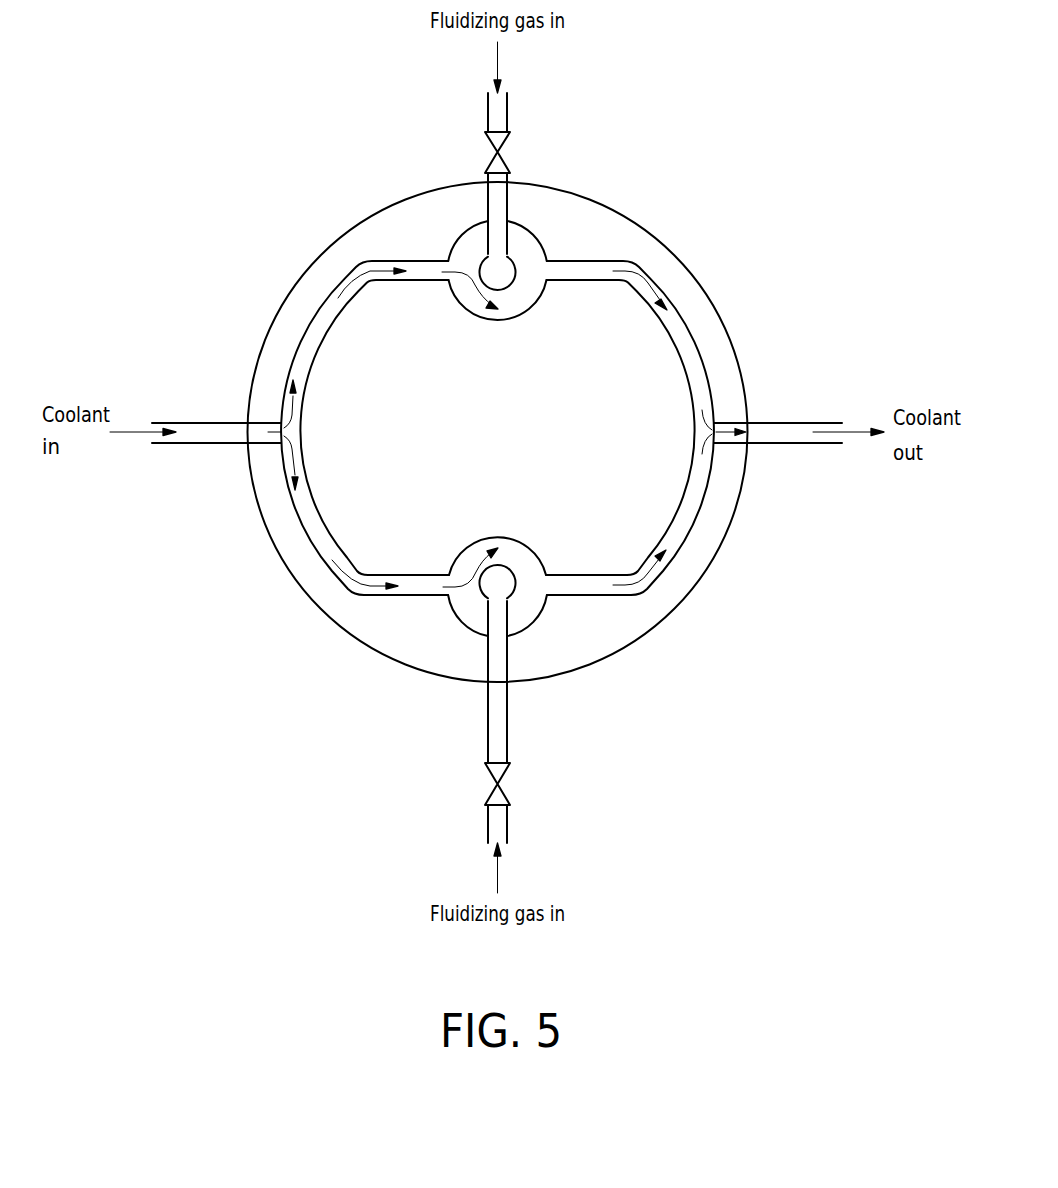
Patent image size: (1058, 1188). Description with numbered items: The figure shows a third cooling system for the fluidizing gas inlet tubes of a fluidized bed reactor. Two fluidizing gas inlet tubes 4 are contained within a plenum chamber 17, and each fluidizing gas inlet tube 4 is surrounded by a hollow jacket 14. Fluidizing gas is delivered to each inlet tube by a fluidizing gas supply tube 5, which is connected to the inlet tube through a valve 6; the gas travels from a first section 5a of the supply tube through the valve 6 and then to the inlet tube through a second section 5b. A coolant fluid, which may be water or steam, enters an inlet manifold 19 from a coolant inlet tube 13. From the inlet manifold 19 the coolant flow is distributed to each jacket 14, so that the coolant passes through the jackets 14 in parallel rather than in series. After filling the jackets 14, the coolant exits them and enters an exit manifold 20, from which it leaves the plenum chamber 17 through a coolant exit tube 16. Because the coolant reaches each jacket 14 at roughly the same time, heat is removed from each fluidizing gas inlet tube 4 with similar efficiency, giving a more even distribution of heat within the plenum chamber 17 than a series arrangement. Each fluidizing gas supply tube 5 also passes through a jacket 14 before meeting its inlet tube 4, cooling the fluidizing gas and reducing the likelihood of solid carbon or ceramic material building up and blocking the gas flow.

The fluidizing gas inlet tube 4 is at (508, 288).
The fluidizing gas supply tube 5 is at (423, 771).
The first section of fluidizing gas supply tube 5a is at (487, 828).
The second section of fluidizing gas supply tube 5b is at (487, 727).
The valve 6 is at (509, 777).
The coolant inlet tube 13 is at (183, 445).
The hollow jacket 14 is at (474, 318).
The coolant exit tube 16 is at (803, 445).
The plenum chamber 17 is at (338, 632).
The inlet manifold 19 is at (308, 488).
The exit manifold 20 is at (693, 440).